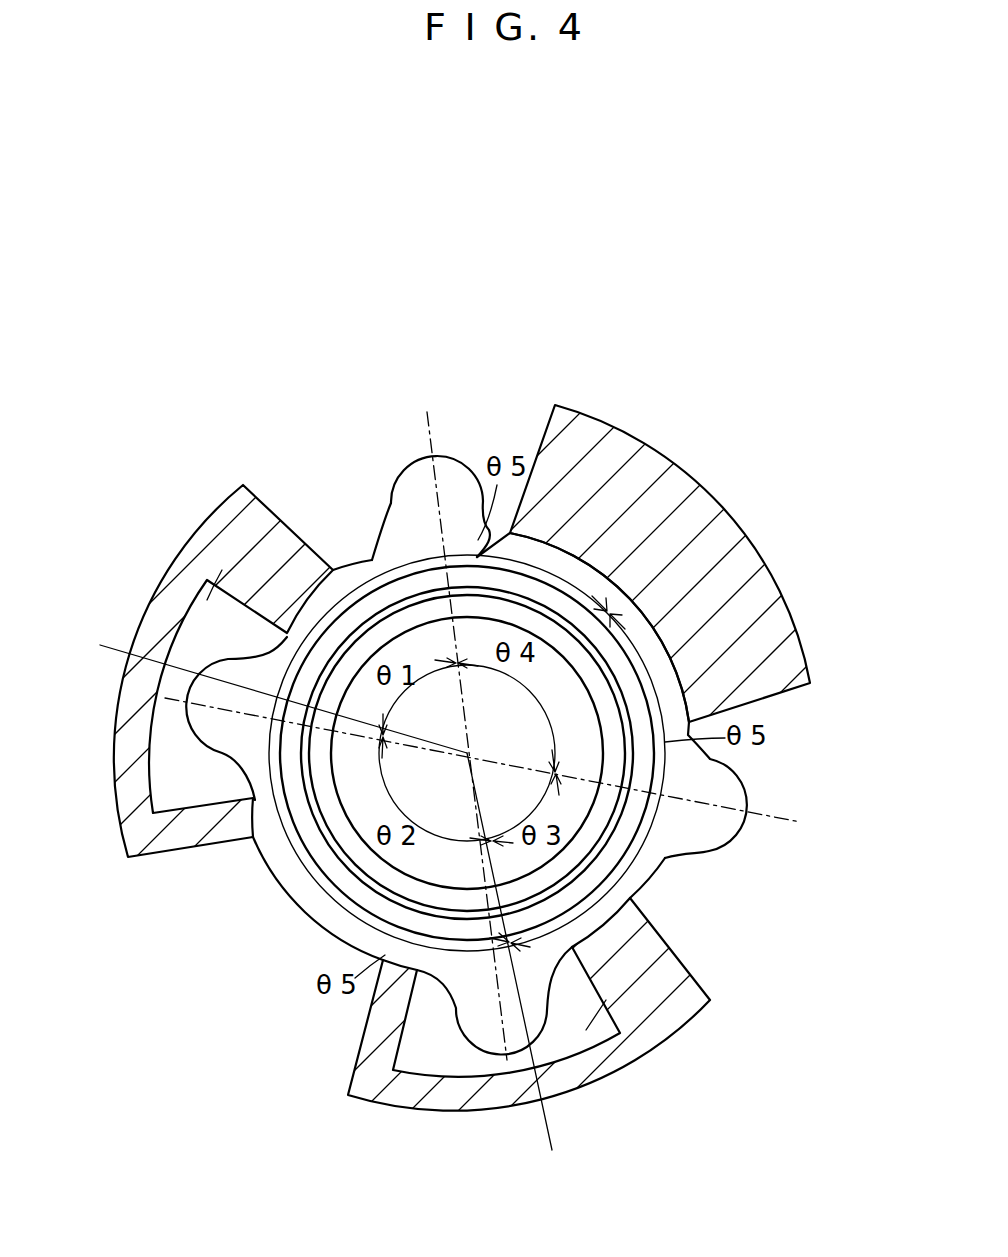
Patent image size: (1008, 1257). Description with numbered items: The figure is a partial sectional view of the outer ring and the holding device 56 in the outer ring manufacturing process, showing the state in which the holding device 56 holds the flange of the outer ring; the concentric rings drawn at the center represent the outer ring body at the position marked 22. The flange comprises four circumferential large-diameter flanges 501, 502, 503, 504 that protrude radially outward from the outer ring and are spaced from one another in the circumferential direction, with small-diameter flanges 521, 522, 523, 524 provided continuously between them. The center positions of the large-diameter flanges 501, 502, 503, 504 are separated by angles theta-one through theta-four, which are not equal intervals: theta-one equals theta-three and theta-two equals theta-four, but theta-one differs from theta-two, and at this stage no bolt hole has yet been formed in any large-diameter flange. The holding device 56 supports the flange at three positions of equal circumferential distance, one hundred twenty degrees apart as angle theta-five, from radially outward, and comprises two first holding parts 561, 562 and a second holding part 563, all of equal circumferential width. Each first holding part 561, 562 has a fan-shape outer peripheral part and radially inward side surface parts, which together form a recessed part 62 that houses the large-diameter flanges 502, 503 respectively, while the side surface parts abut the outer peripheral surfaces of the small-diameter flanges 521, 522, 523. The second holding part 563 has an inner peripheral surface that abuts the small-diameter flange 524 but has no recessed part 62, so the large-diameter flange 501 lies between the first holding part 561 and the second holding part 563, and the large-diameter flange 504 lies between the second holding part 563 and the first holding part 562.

The rotor 22 is at (335, 840).
The holding device 56 is at (229, 470).
The recessed part 62 is at (210, 620).
The large-diameter flange 501 is at (450, 468).
The large-diameter flange 502 is at (210, 668).
The large-diameter flange 503 is at (470, 1015).
The large-diameter flange 504 is at (737, 793).
The small-diameter flange 521 is at (317, 613).
The small-diameter flange 522 is at (335, 915).
The small-diameter flange 523 is at (590, 915).
The small-diameter flange 524 is at (670, 625).
The first holding part 561 is at (133, 707).
The first holding part 562 is at (563, 1087).
The second holding part 563 is at (673, 483).